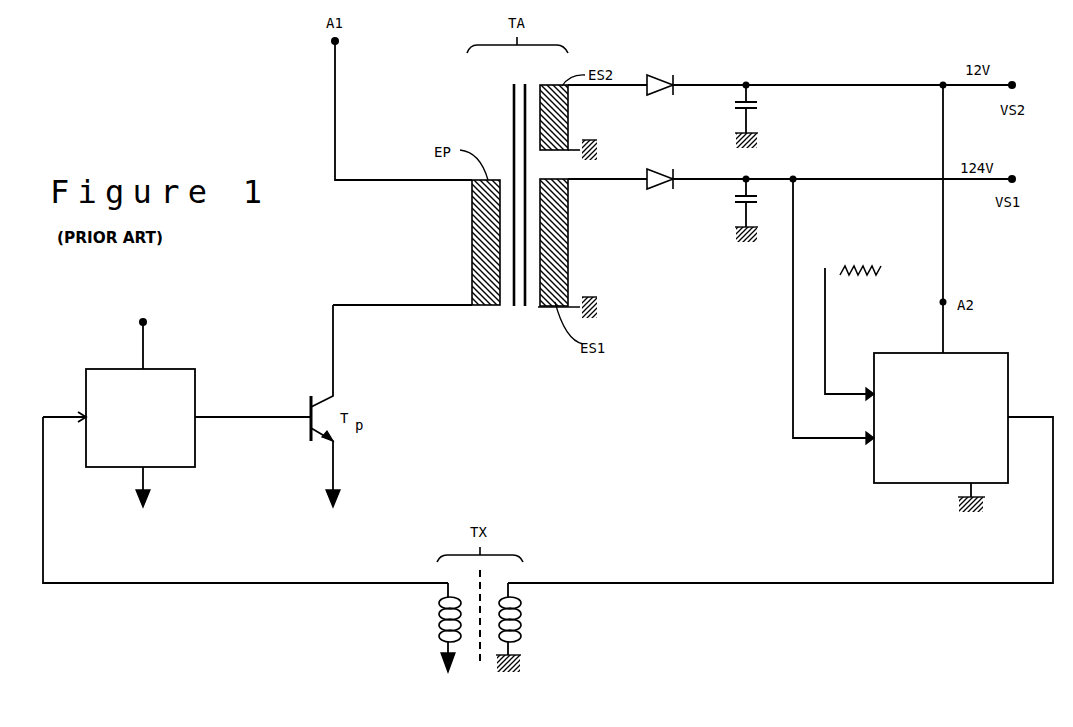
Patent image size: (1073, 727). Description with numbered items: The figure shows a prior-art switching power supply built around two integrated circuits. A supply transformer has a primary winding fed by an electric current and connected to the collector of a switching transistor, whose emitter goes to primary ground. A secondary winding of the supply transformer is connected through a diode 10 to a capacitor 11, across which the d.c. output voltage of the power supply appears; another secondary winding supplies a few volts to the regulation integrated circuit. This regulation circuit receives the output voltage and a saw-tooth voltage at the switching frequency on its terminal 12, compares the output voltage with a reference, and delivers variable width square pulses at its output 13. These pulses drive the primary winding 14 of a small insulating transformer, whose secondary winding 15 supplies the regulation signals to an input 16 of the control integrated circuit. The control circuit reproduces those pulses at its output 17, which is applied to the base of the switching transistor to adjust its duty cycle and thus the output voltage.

The diode 10 is at (645, 183).
The capacitor 11 is at (740, 206).
The terminal 12 is at (874, 391).
The output 13 is at (1008, 412).
The primary winding 14 is at (523, 612).
The secondary winding 15 is at (438, 612).
The input 16 is at (75, 412).
The output 17 is at (196, 413).